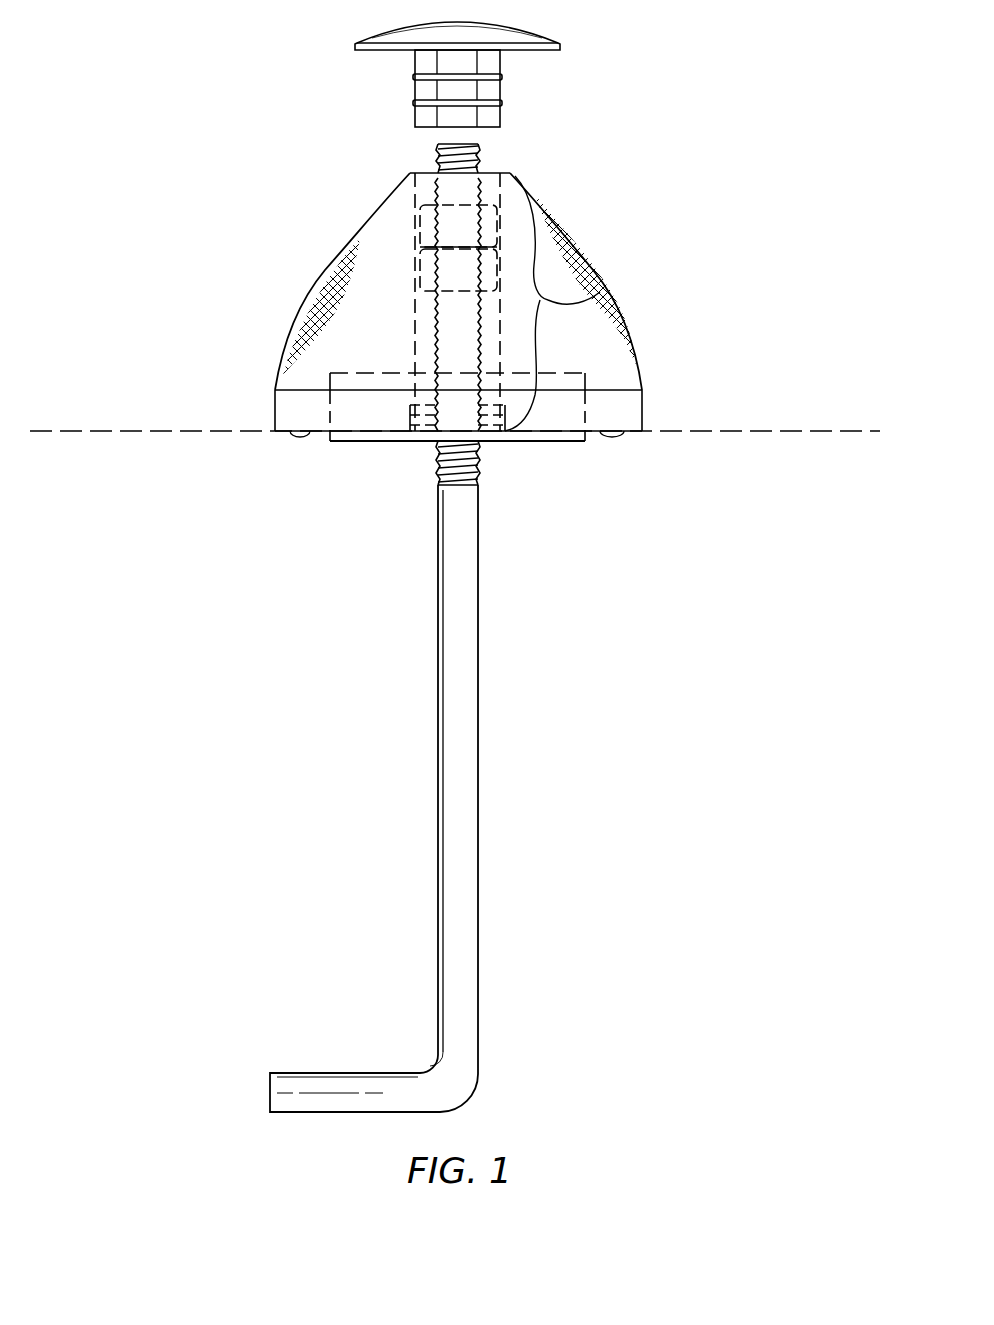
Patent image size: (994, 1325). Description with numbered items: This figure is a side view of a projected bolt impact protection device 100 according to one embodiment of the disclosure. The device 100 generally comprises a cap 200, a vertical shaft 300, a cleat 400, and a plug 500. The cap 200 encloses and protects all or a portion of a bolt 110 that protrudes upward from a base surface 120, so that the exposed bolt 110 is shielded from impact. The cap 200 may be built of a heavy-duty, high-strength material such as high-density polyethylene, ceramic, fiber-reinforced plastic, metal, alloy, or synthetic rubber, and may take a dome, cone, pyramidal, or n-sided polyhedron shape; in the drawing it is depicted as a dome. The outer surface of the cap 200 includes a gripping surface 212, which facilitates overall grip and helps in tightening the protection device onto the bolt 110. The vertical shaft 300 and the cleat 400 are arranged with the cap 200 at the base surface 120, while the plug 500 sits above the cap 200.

The projected bolt impact protection device 100 is at (240, 146).
The bolt 110 is at (478, 694).
The base surface 120 is at (175, 430).
The cap 200 is at (572, 236).
The gripping surface 212 is at (295, 296).
The vertical shaft 300 is at (606, 298).
The cleat 400 is at (562, 446).
The plug 500 is at (565, 38).